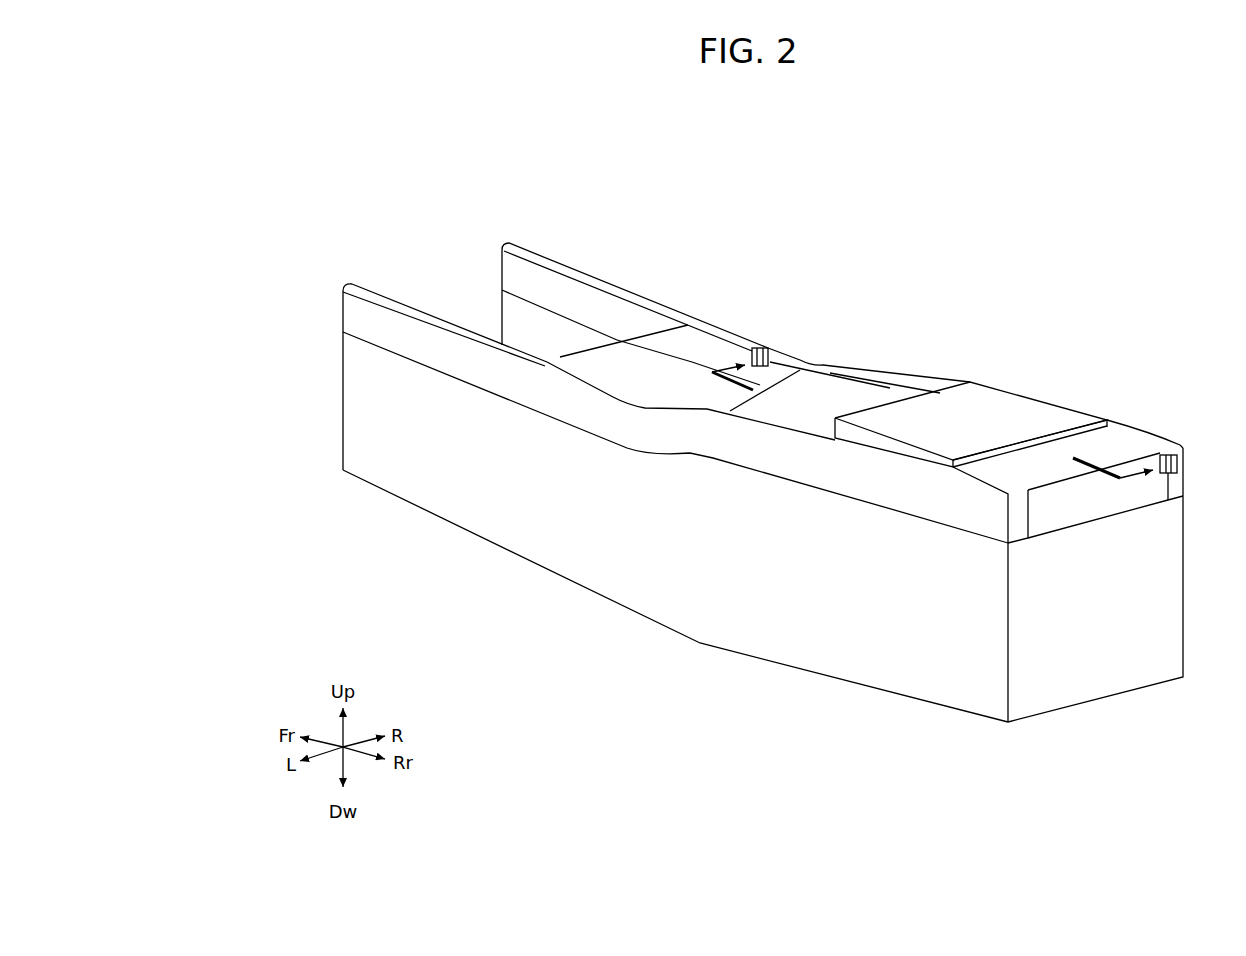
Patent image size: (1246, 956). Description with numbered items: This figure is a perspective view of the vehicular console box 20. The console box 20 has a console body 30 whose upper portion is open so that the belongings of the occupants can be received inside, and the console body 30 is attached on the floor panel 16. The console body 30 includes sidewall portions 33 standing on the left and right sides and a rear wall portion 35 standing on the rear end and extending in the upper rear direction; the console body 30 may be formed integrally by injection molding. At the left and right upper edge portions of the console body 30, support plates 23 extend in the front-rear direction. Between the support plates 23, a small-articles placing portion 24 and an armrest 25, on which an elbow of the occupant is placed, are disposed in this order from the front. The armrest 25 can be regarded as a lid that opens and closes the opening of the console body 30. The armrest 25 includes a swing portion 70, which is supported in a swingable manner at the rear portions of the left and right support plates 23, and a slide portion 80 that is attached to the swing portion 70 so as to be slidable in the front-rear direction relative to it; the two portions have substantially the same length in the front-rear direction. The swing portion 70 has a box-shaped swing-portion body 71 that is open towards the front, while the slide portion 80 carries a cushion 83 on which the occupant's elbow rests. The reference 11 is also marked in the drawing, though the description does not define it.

The vehicle seat 11 is at (823, 271).
The floor panel 16 is at (504, 635).
The console box 20 is at (935, 297).
The support plate 23 is at (985, 520).
The small-articles placing portion 24 is at (697, 367).
The armrest 25 is at (1167, 321).
The console body 30 is at (847, 640).
The sidewall portion 33 is at (903, 637).
The rear wall portion 35 is at (1085, 645).
The swing portion 70 is at (1113, 450).
The swing-portion body 71 is at (1042, 470).
The slide portion 80 is at (1048, 418).
The cushion 83 is at (973, 410).